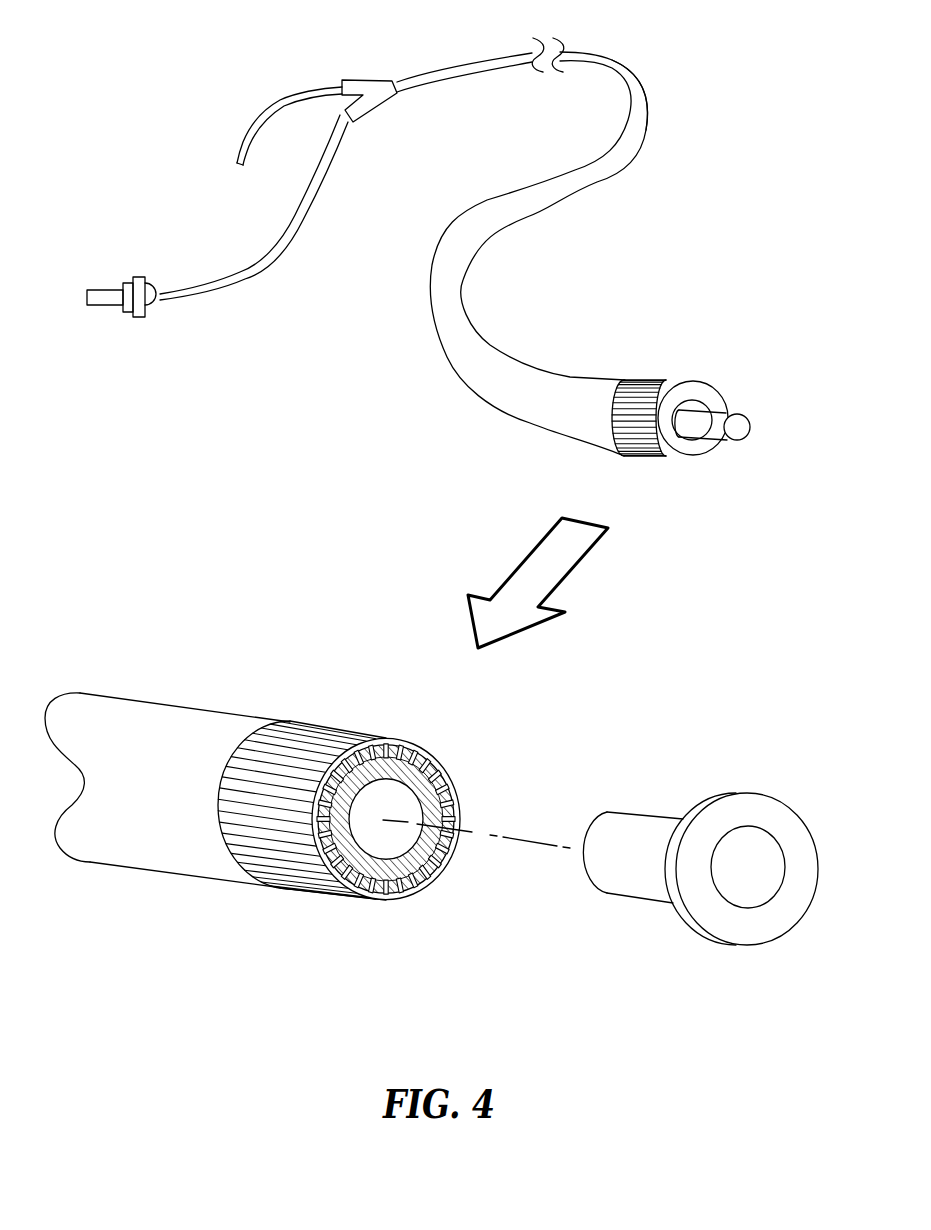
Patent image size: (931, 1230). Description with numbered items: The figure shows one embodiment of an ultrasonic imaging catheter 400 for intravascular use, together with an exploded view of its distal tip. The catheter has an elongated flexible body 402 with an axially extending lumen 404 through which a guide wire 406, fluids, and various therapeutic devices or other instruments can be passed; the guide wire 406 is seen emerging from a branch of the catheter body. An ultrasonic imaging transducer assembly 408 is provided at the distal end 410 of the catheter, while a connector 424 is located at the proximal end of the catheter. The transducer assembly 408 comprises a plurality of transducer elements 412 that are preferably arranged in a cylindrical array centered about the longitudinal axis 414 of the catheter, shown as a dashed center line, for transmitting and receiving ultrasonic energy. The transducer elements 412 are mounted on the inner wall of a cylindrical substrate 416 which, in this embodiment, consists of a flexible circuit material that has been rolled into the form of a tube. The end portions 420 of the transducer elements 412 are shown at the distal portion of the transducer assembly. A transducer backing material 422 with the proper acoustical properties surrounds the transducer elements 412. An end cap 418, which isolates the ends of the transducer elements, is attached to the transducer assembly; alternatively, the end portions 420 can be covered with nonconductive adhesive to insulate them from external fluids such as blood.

The catheter 400 is at (427, 343).
The elongated flexible body 402 is at (610, 53).
The axially extending lumen 404 is at (723, 412).
The guide wire 406 is at (237, 135).
The ultrasonic imaging transducer assembly 408 is at (667, 378).
The distal end 410 is at (708, 383).
The transducer elements 412 is at (298, 885).
The longitudinal axis 414 is at (498, 835).
The cylindrical substrate 416 is at (443, 865).
The end cap 418 is at (743, 793).
The end portions 420 is at (382, 897).
The transducer backing material 422 is at (387, 767).
The connector 424 is at (138, 322).